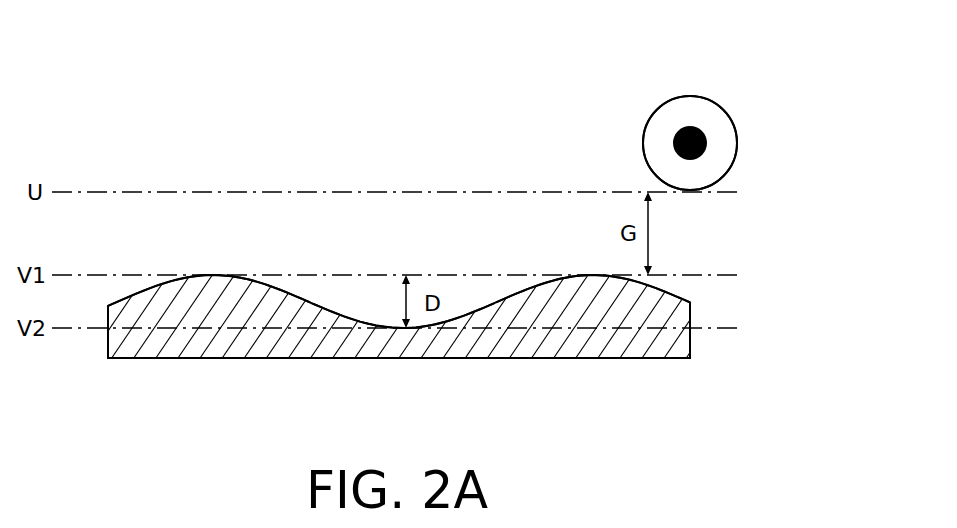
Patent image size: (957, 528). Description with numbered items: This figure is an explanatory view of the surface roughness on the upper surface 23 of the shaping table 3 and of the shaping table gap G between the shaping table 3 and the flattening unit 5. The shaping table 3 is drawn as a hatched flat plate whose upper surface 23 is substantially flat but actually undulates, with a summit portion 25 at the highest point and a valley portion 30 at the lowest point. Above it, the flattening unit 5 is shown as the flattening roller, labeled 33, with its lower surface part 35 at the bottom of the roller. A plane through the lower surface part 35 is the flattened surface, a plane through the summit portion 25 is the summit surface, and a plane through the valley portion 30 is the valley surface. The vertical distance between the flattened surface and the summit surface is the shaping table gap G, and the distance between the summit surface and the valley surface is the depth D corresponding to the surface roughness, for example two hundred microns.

The shaping table 3 is at (220, 351).
The flattening unit 5 is at (725, 137).
The upper surface 23 is at (130, 296).
The summit portion 25 is at (590, 273).
The valley portion 30 is at (384, 313).
The roller outer surface 33 is at (725, 130).
The lower surface part 35 is at (688, 192).